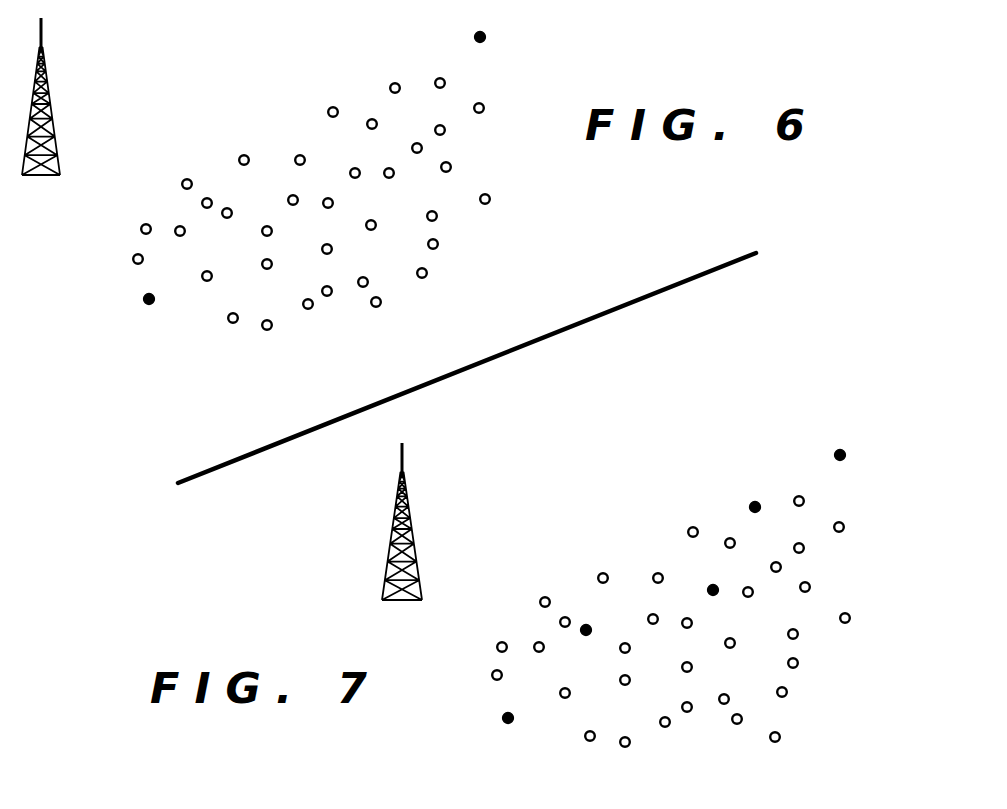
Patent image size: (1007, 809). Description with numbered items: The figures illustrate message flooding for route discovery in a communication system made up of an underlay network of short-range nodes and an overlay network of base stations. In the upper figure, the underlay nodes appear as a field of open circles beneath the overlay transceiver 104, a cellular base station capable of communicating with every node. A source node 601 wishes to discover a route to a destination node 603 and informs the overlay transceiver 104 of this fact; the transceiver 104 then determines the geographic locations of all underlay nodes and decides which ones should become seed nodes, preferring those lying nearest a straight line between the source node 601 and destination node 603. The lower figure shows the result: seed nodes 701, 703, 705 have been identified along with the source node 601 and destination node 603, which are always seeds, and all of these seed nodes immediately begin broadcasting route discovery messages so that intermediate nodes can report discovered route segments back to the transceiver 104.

In FIG. 6, the overlay transceiver 104 is at (52, 97).
In FIG. 7, the overlay transceiver 104 is at (412, 518).
In FIG. 6, the source node 601 is at (146, 305).
In FIG. 7, the source node 601 is at (505, 723).
In FIG. 6, the destination node 603 is at (485, 32).
In FIG. 7, the destination node 603 is at (845, 450).
In FIG. 7, the seed node 701 is at (590, 625).
In FIG. 7, the seed node 703 is at (709, 585).
In FIG. 7, the seed node 705 is at (751, 502).